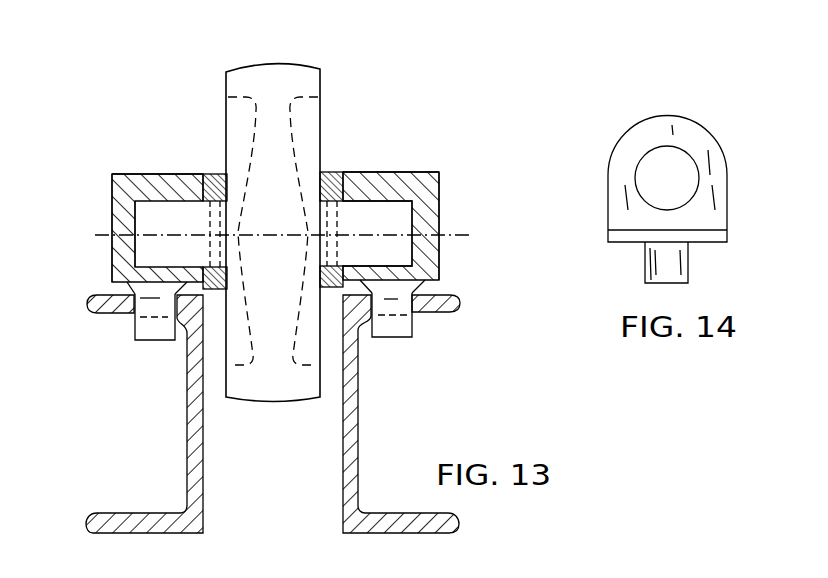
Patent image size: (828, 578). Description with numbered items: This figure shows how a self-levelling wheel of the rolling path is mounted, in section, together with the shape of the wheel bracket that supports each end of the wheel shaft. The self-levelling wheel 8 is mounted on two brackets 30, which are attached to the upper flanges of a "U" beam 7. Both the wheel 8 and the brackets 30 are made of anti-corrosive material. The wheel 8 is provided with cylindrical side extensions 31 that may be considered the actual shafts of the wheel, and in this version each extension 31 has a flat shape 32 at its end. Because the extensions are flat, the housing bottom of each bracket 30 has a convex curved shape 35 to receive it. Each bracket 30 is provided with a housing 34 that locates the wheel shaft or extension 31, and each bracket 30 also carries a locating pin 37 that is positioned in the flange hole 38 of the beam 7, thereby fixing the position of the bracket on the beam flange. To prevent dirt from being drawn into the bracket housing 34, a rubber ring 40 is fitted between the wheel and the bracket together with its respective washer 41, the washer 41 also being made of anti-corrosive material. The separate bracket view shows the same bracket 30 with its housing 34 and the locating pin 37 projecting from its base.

In FIG. 13, the "U" beam 7 is at (193, 457).
In FIG. 13, the self-levelling wheel 8 is at (310, 123).
In FIG. 13, the bracket 30 is at (122, 186).
In FIG. 14, the bracket 30 is at (622, 160).
In FIG. 13, the cylindrical side extension 31 is at (177, 220).
In FIG. 13, the flat shape 32 is at (135, 255).
In FIG. 13, the housing 34 is at (152, 199).
In FIG. 14, the housing 34 is at (672, 167).
In FIG. 13, the convex curved shape 35 is at (133, 207).
In FIG. 13, the locating pin 37 is at (148, 330).
In FIG. 14, the locating pin 37 is at (645, 258).
In FIG. 13, the flange hole 38 is at (123, 311).
In FIG. 13, the rubber ring 40 is at (217, 180).
In FIG. 13, the washer 41 is at (209, 178).